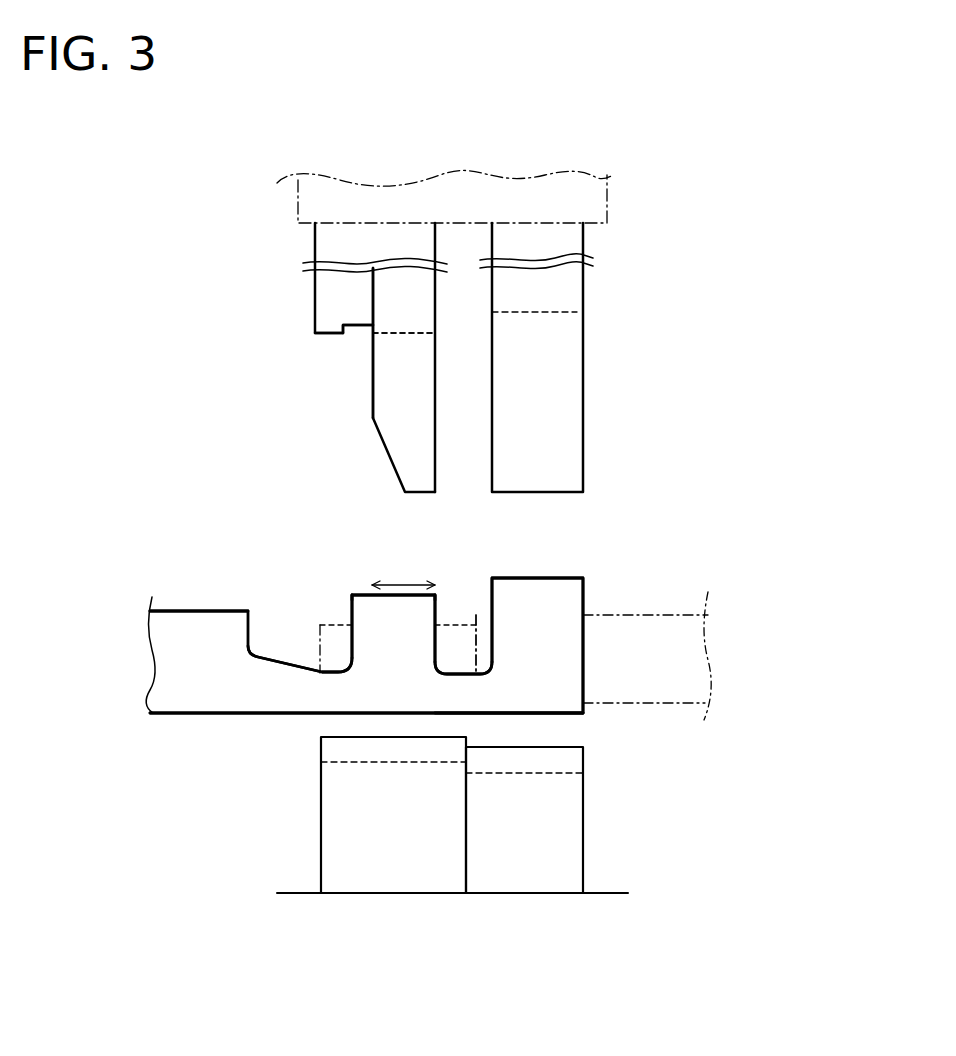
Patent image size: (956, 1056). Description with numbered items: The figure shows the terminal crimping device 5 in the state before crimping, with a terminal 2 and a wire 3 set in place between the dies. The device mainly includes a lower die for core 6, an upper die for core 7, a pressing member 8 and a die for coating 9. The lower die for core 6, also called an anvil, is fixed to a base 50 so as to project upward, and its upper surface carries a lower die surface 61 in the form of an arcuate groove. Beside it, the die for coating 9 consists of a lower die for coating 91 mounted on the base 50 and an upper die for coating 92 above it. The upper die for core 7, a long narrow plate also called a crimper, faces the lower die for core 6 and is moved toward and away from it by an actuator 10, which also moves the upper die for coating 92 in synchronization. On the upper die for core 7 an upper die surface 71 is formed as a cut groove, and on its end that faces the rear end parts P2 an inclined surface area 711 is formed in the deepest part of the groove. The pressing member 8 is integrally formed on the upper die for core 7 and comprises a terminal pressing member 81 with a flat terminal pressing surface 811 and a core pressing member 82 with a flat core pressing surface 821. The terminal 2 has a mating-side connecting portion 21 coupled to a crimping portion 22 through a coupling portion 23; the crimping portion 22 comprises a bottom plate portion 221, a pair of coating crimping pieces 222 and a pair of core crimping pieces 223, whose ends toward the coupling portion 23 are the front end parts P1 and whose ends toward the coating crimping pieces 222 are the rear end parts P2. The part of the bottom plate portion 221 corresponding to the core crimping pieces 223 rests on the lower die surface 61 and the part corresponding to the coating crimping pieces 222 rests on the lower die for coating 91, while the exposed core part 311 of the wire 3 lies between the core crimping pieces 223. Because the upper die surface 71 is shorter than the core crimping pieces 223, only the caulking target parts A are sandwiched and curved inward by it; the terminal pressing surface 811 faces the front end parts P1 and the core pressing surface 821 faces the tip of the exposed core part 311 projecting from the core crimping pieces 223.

The actuator 10 is at (607, 202).
The pressing member 8 is at (373, 357).
The core pressing member 82 is at (322, 286).
The core pressing surface 821 is at (327, 340).
The terminal pressing member 81 is at (365, 302).
The terminal pressing surface 811 is at (357, 331).
The upper die for core 7 is at (437, 380).
The upper die surface 71 is at (404, 340).
The inclined surface area 711 is at (430, 333).
The die for coating 9 is at (586, 357).
The upper die for coating 92 is at (585, 344).
The terminal crimping device 5 is at (774, 380).
The terminal 2 is at (364, 666).
The mating-side connecting portion 21 is at (197, 618).
The crimping portion 22 is at (510, 728).
The coupling portion 23 is at (272, 670).
The bottom plate portion 221 is at (378, 713).
The coating crimping pieces 222 is at (550, 577).
The core crimping pieces 223 is at (358, 607).
The front end parts P1 is at (352, 588).
The rear end parts P2 is at (435, 586).
The caulking target parts A is at (397, 580).
The wire 3 is at (580, 630).
The exposed core part 311 is at (463, 622).
The lower die for core 6 is at (367, 814).
The lower die surface 61 is at (330, 760).
The lower die for coating 91 is at (585, 798).
The base 50 is at (617, 890).